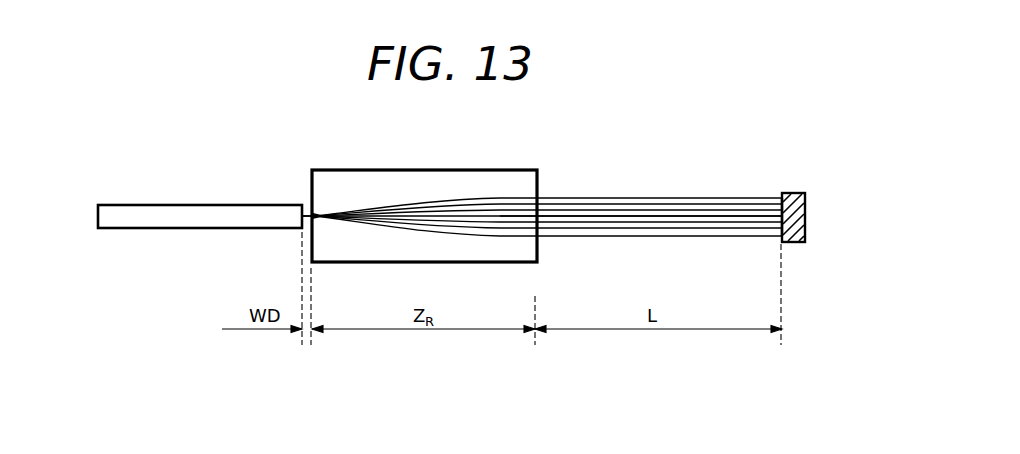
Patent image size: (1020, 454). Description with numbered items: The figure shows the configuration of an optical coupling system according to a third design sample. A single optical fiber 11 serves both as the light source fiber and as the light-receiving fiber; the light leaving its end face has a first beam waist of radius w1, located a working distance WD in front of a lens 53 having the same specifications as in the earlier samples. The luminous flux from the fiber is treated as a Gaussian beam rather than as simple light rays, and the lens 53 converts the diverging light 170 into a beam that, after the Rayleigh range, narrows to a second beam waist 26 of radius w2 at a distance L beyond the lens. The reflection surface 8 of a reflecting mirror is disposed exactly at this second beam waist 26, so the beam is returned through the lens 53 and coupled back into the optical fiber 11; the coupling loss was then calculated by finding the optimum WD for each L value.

The optical fiber 11 is at (207, 214).
The first beam waist radius w1 is at (302, 207).
The lens 53 is at (396, 196).
The light beam 170 is at (538, 183).
The reflection surface 8 is at (782, 216).
The second beam waist 26 is at (778, 193).
The second beam waist radius w2 is at (798, 201).